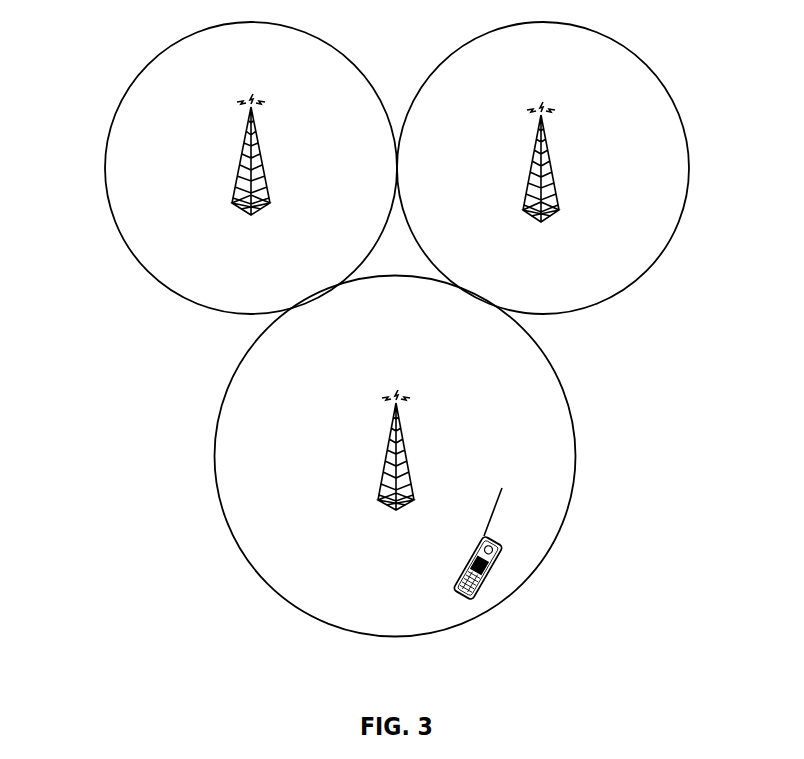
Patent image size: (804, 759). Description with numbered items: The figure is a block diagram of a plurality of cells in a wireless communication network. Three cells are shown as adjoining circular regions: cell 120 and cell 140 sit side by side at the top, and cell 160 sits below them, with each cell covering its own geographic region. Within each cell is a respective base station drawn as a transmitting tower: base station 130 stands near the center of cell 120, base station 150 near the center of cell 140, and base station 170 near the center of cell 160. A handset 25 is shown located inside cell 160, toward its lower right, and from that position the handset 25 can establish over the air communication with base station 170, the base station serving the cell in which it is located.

The cell 120 is at (105, 167).
The base station 130 is at (260, 152).
The cell 140 is at (688, 168).
The base station 150 is at (547, 165).
The cell 160 is at (213, 455).
The base station 170 is at (402, 452).
The handset 25 is at (482, 583).